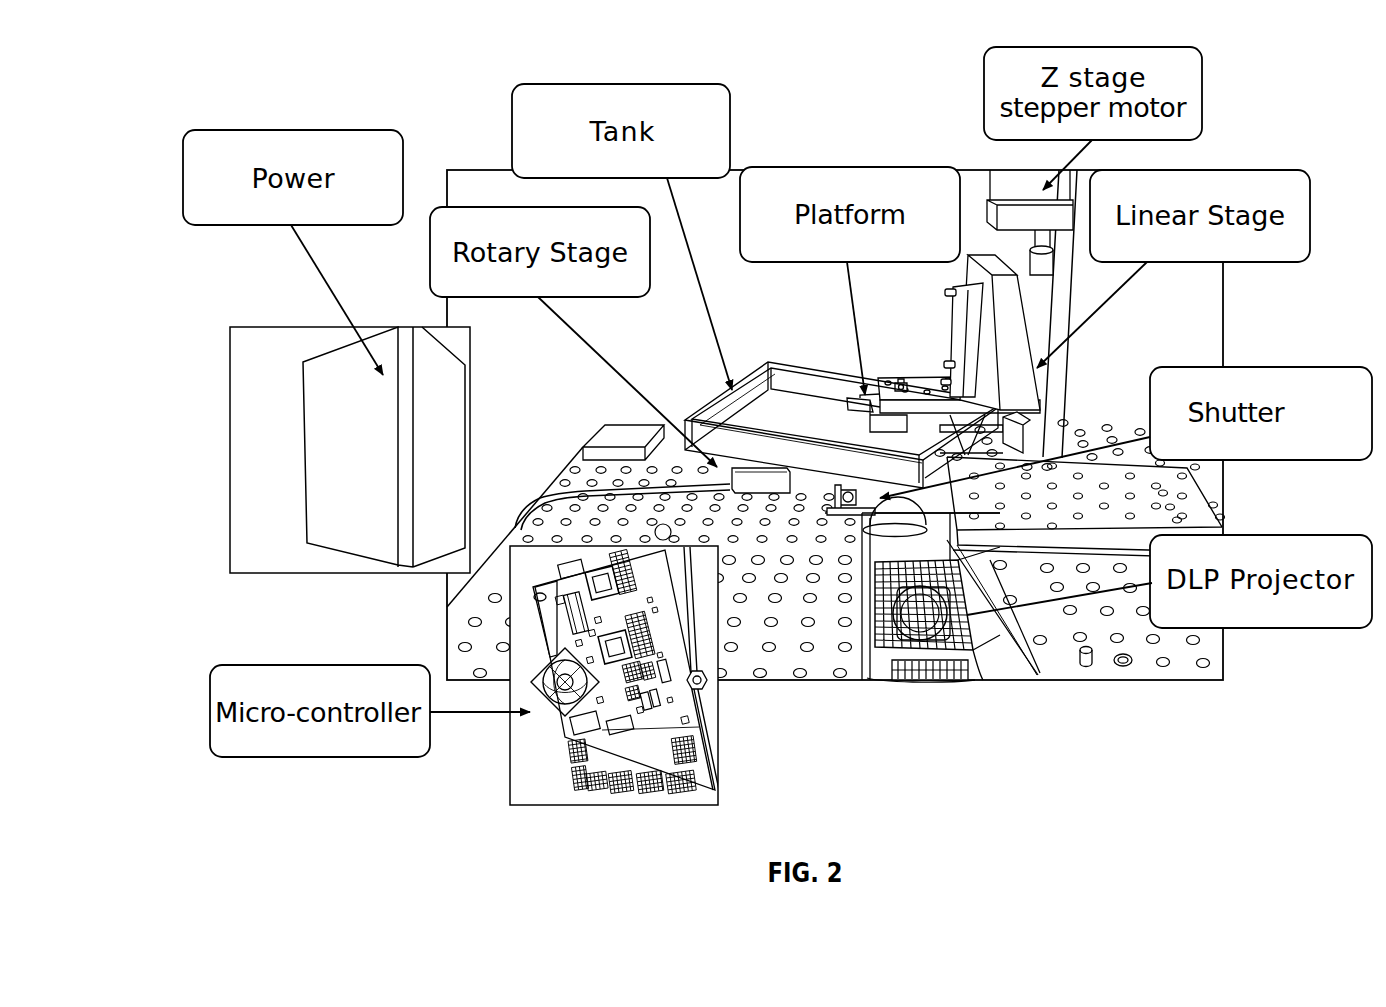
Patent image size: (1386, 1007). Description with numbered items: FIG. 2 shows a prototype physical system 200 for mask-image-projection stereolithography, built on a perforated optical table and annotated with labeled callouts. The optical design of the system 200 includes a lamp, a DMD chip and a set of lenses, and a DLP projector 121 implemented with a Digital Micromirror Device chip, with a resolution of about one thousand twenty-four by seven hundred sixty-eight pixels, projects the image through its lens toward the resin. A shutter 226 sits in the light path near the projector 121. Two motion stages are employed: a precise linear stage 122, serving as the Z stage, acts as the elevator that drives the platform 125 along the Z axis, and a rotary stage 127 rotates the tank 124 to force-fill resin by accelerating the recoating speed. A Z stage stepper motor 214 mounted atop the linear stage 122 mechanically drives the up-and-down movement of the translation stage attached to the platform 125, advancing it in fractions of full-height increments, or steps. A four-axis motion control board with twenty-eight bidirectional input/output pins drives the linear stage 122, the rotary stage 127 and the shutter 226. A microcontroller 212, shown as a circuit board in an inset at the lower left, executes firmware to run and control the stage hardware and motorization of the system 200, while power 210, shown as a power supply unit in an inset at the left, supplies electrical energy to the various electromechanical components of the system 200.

The prototype physical system 200 is at (240, 90).
The power 210 is at (303, 437).
The microcontroller 212 is at (565, 717).
The Z stage stepper motor 214 is at (1032, 198).
The DLP projector 121 is at (932, 635).
The linear stage 122 is at (1017, 352).
The tank 124 is at (713, 410).
The platform 125 is at (857, 393).
The rotary stage 127 is at (762, 493).
The shutter 226 is at (927, 537).